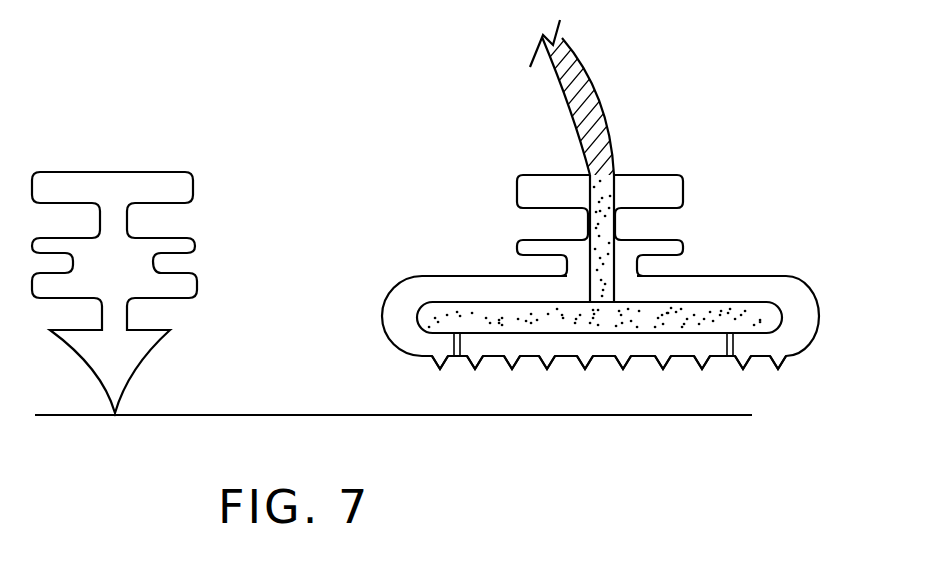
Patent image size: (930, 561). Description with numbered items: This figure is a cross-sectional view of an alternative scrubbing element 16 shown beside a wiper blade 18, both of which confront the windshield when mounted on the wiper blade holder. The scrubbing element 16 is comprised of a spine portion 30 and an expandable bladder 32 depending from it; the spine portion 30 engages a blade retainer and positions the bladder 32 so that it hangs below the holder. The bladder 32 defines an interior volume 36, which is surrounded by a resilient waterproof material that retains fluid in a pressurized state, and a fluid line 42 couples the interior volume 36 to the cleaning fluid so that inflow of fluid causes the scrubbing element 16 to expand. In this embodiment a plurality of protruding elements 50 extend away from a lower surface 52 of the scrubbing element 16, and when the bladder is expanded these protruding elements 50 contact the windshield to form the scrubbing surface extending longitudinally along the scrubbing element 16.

The scrubbing element 16 is at (800, 280).
The wiper blade 18 is at (180, 173).
The spine portion 30 is at (607, 228).
The expandable bladder 32 is at (797, 315).
The interior volume 36 is at (687, 310).
The fluid line 42 is at (600, 92).
The protruding elements 50 is at (773, 380).
The lower surface 52 is at (413, 367).